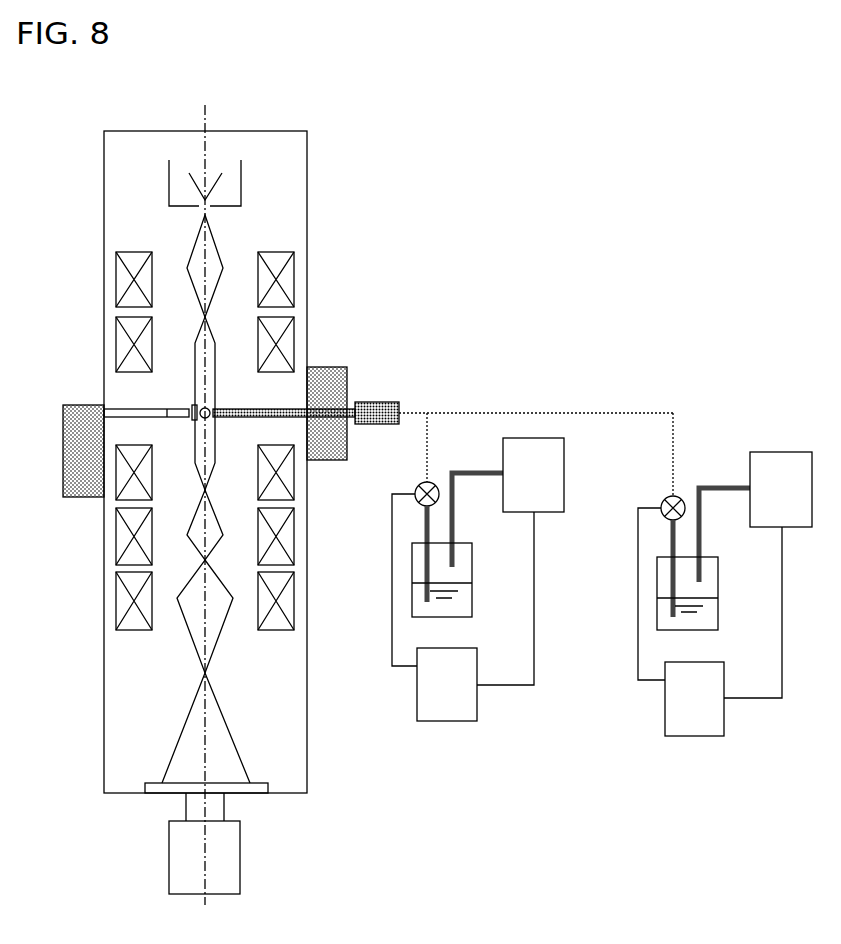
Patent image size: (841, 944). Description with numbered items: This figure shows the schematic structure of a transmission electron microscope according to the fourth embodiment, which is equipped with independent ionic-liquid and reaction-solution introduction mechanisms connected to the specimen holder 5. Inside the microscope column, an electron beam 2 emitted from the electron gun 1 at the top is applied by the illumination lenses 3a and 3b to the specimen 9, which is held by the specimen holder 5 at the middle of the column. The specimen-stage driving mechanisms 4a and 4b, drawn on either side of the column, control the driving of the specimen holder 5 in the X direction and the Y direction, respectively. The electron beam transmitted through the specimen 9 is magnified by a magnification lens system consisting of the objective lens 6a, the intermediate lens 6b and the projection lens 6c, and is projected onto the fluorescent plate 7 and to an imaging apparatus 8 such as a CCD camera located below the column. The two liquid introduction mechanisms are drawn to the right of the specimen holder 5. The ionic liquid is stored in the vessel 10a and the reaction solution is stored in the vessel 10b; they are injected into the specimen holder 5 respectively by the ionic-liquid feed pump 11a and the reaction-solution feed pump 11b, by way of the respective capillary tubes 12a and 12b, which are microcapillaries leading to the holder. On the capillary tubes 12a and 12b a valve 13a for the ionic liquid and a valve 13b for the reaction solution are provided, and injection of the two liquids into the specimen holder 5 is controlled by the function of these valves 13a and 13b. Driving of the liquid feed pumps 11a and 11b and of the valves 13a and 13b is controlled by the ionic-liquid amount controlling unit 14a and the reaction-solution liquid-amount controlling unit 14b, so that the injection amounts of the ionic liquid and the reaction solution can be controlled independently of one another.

The electron gun 1 is at (233, 184).
The electron beam 2 is at (215, 258).
The illumination lens 3a is at (286, 288).
The illumination lens 3b is at (286, 346).
The specimen-stage driving mechanism 4a is at (330, 372).
The specimen-stage driving mechanism 4b is at (87, 403).
The specimen holder 5 is at (372, 400).
The objective lens 6a is at (287, 470).
The intermediate lens 6b is at (287, 535).
The projection lens 6c is at (287, 607).
The fluorescent plate 7 is at (258, 789).
The imaging apparatus 8 is at (232, 852).
The specimen 9 is at (210, 408).
The vessel for ionic liquid 10a is at (463, 575).
The vessel for reaction solution 10b is at (710, 583).
The ionic-liquid feed pump 11a is at (527, 445).
The reaction-solution feed pump 11b is at (777, 462).
The capillary tube for feeding ionic liquid 12a is at (427, 462).
The capillary tube for feeding a reaction solution 12b is at (673, 478).
The valve for ionic liquid 13a is at (417, 487).
The valve for reaction solution 13b is at (663, 500).
The ionic-liquid amount controlling unit 14a is at (465, 683).
The liquid-amount controlling unit for reaction solution 14b is at (712, 698).